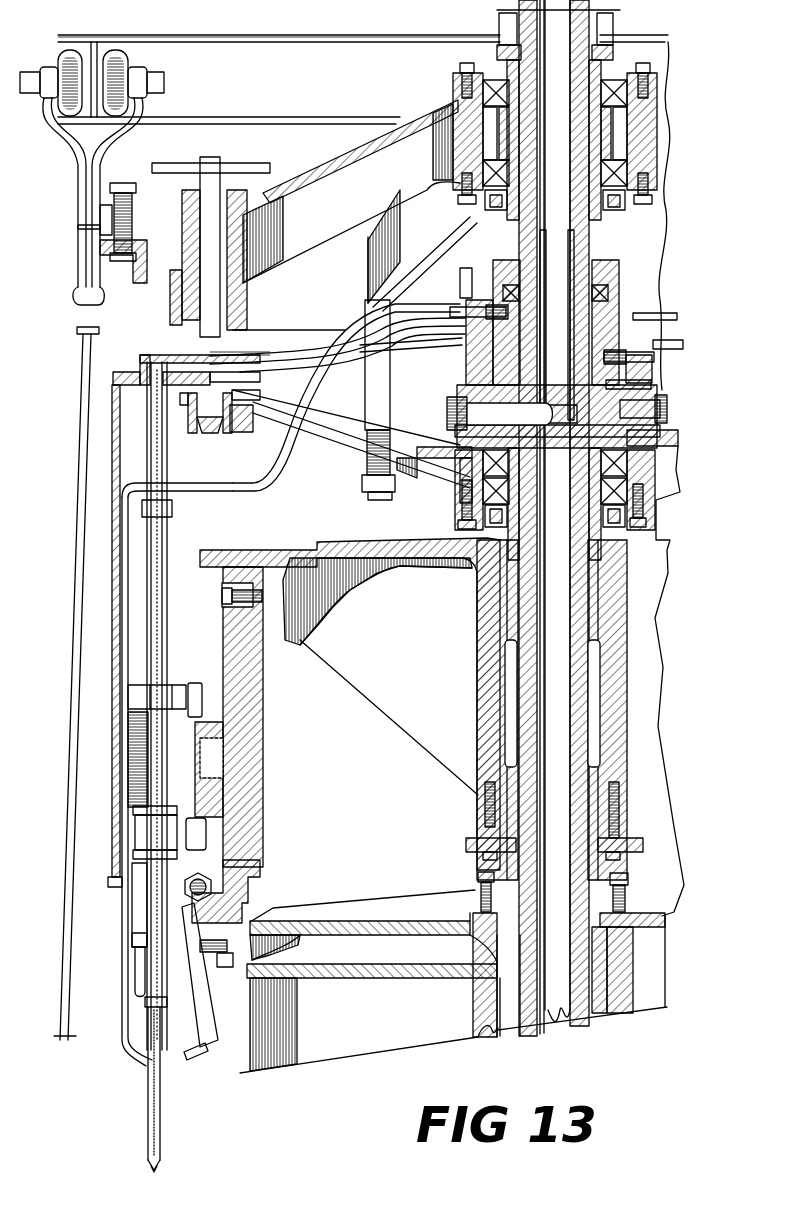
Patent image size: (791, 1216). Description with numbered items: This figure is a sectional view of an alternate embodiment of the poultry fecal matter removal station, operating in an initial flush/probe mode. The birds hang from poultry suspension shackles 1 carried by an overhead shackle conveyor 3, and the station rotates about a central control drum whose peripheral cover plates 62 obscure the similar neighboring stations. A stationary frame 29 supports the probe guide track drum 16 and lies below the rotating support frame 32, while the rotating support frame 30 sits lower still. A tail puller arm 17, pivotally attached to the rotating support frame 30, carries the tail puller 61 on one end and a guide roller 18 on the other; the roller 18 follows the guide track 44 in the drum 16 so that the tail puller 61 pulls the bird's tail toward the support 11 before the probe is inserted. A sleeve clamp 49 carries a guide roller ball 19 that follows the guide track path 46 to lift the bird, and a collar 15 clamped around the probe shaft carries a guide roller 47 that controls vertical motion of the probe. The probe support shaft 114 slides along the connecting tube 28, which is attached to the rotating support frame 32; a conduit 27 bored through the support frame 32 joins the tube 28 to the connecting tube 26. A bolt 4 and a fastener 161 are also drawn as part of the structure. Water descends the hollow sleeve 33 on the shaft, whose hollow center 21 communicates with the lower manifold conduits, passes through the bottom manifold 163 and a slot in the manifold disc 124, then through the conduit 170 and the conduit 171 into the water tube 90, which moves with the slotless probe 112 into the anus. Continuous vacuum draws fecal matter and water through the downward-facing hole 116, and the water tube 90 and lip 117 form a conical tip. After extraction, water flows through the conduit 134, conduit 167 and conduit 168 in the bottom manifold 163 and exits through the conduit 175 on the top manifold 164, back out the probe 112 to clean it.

The poultry suspension shackle 1 is at (82, 458).
The overhead shackle conveyor 3 is at (60, 64).
The bolt 4 is at (104, 250).
The support 11 is at (285, 1042).
The collar 15 is at (164, 841).
The probe guide track drum 16 is at (250, 778).
The tail puller arm 17 is at (210, 1035).
The guide roller 18 is at (212, 880).
The guide roller ball 19 is at (204, 682).
The hollow center of shaft 21 is at (569, 163).
The connecting tube 26 is at (295, 372).
The conduit 27 is at (172, 356).
The connecting tube 28 is at (165, 438).
The stationary frame 29 is at (408, 700).
The rotating support frame 30 is at (361, 960).
The rotating support frame 32 is at (386, 140).
The hollow sleeve 33 is at (605, 40).
The guide track 44 is at (248, 893).
The guide track path 46 is at (215, 718).
The guide roller 47 is at (208, 836).
The sleeve clamp 49 is at (176, 688).
The tail puller 61 is at (195, 1060).
The cover plate 62 is at (114, 758).
The water tube 90 is at (283, 468).
The probe 112 is at (162, 1090).
The probe support shaft 114 is at (165, 570).
The hole (end of probe) 116 is at (158, 1162).
The lip 117 is at (160, 1170).
The manifold disc 124 is at (460, 392).
The conduit 134 is at (545, 390).
The bolt 161 is at (530, 427).
The bottom manifold 163 is at (455, 415).
The top manifold 164 is at (630, 300).
The conduit 167 is at (662, 414).
The conduit 168 is at (652, 385).
The conduit 170 is at (492, 280).
The conduit 171 is at (488, 296).
The conduit 175 is at (478, 306).